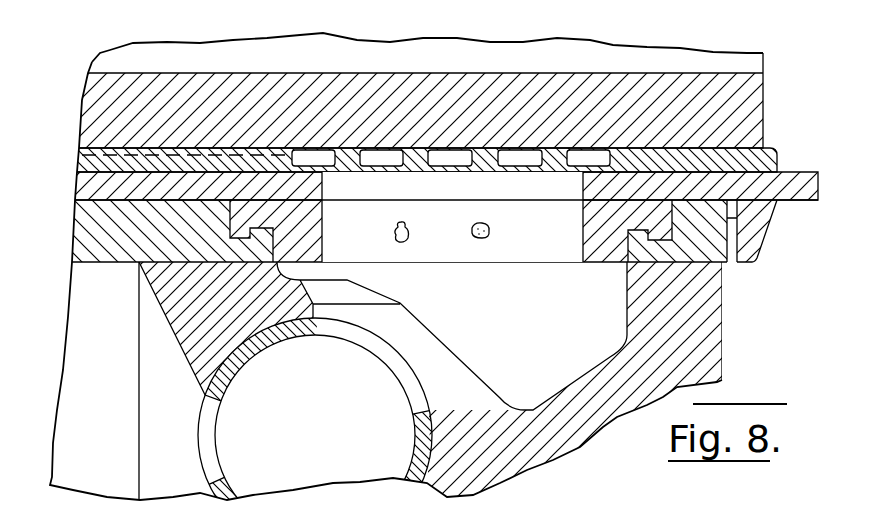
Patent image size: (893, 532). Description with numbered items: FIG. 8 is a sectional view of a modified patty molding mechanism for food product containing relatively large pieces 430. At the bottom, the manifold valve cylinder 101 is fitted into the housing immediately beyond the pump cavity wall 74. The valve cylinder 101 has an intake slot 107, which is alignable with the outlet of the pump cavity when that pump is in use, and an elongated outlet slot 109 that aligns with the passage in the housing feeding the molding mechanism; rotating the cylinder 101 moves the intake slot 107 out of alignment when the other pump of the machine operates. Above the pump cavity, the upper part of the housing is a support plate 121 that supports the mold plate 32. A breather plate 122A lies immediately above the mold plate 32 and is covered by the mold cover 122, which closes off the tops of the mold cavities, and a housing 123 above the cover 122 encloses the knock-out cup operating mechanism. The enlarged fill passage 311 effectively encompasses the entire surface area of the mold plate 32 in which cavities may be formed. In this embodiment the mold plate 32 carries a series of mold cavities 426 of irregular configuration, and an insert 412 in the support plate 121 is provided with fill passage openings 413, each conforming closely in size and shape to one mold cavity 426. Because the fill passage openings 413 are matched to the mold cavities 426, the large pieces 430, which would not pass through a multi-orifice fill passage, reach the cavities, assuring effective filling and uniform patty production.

The housing 123 is at (108, 54).
The mold cover 122 is at (763, 92).
The breather plate 122A is at (463, 138).
The mold plate 32 is at (798, 178).
The support plate 121 is at (82, 228).
The mold cavities 426 is at (440, 185).
The pieces 430 is at (402, 243).
The fill passage openings 413 is at (550, 248).
The insert 412 is at (610, 263).
The fill passage 311 is at (499, 379).
The pump cavity wall 74 is at (172, 327).
The manifold valve cylinder 101 is at (278, 345).
The outlet slot 109 is at (408, 382).
The intake slot 107 is at (210, 435).